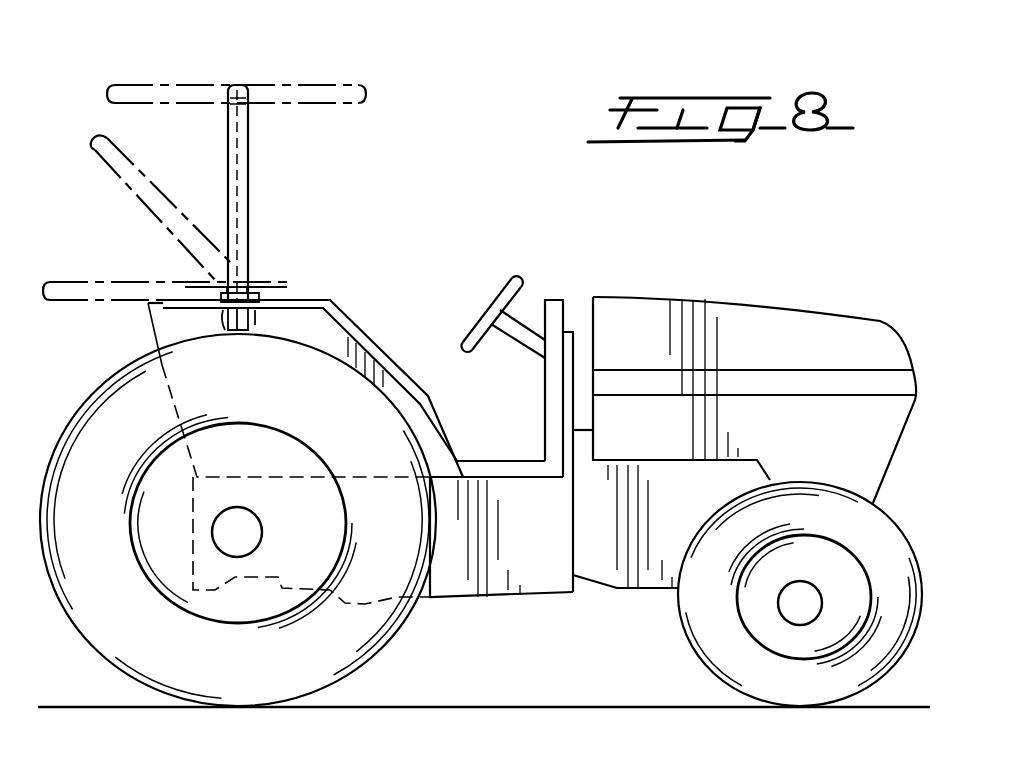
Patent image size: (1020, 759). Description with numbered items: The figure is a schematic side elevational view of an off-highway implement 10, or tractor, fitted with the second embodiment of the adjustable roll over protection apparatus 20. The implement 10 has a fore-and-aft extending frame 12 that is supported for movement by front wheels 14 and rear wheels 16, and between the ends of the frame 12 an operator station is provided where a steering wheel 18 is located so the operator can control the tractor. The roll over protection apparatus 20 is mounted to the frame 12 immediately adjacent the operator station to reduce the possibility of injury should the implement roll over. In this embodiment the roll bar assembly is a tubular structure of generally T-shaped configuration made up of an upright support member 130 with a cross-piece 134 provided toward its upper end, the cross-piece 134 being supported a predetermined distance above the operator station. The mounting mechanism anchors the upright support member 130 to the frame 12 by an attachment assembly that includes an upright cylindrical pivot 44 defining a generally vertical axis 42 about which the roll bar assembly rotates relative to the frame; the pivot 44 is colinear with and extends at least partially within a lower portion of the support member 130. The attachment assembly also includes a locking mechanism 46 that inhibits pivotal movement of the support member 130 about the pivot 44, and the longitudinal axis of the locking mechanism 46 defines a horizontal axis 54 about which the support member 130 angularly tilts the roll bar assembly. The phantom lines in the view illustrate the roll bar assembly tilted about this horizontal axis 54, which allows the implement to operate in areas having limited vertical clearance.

The implement 10 is at (532, 426).
The frame 12 is at (462, 598).
The front wheels 14 is at (712, 645).
The rear wheels 16 is at (110, 642).
The steering wheel 18 is at (493, 306).
The roll over protection apparatus 20 is at (287, 161).
The vertical axis 42 is at (238, 226).
The pivot 44 is at (230, 273).
The locking mechanism 46 is at (231, 331).
The horizontal axis 54 is at (247, 288).
The upright support member 130 is at (243, 178).
The cross-piece 134 is at (240, 84).